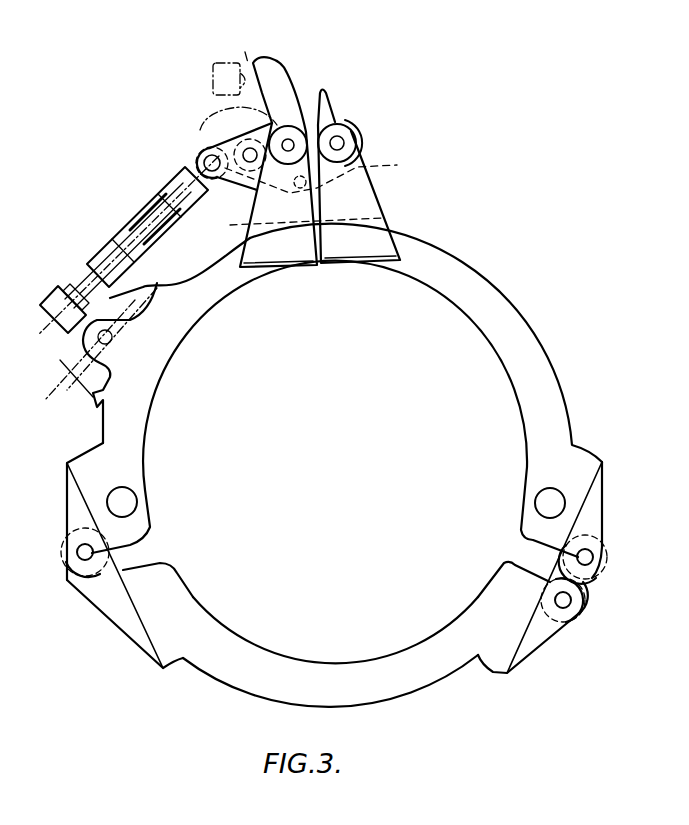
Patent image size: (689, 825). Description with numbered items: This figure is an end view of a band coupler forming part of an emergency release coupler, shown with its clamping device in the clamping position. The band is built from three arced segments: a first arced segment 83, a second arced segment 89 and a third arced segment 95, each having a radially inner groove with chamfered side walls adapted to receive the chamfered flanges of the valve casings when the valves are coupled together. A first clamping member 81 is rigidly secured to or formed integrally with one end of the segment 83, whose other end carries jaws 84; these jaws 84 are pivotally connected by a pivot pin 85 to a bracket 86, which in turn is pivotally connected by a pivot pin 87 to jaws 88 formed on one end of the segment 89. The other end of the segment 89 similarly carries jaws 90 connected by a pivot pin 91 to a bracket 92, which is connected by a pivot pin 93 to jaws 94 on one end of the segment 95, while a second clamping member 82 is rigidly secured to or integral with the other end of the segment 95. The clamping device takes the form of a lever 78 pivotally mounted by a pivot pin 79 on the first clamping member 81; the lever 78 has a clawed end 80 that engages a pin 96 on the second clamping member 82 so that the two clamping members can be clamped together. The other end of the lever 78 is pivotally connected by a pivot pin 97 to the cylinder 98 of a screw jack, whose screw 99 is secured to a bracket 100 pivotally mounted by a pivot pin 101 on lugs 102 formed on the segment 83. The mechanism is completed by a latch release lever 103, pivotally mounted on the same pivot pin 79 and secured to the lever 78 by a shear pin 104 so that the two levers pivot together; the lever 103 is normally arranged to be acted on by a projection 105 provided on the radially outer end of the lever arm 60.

The lever arm 60 is at (213, 80).
The lever 78 is at (247, 185).
The pivot pin 79 is at (288, 145).
The clawed end 80 is at (340, 130).
The first clamping member 81 is at (262, 218).
The second clamping member 82 is at (362, 205).
The arced segment 83 is at (110, 432).
The jaws 84 is at (68, 508).
The pivot pin 85 is at (66, 550).
The bracket 86 is at (80, 575).
The pivot pin 87 is at (83, 562).
The jaws 88 is at (135, 640).
The second arced segment 89 is at (255, 678).
The jaws 90 is at (523, 650).
The pivot pin 91 is at (568, 606).
The bracket 92 is at (580, 580).
The pivot pin 93 is at (592, 559).
The jaws 94 is at (585, 512).
The third arced segment 95 is at (510, 335).
The pin 96 is at (343, 142).
The pivot pin 97 is at (205, 160).
The cylinder 98 is at (150, 210).
The screw 99 is at (72, 290).
The bracket 100 is at (92, 392).
The pivot pin 101 is at (98, 340).
The lugs 102 is at (85, 375).
The latch release lever 103 is at (272, 58).
The shear pin 104 is at (372, 166).
The projection 105 is at (245, 52).